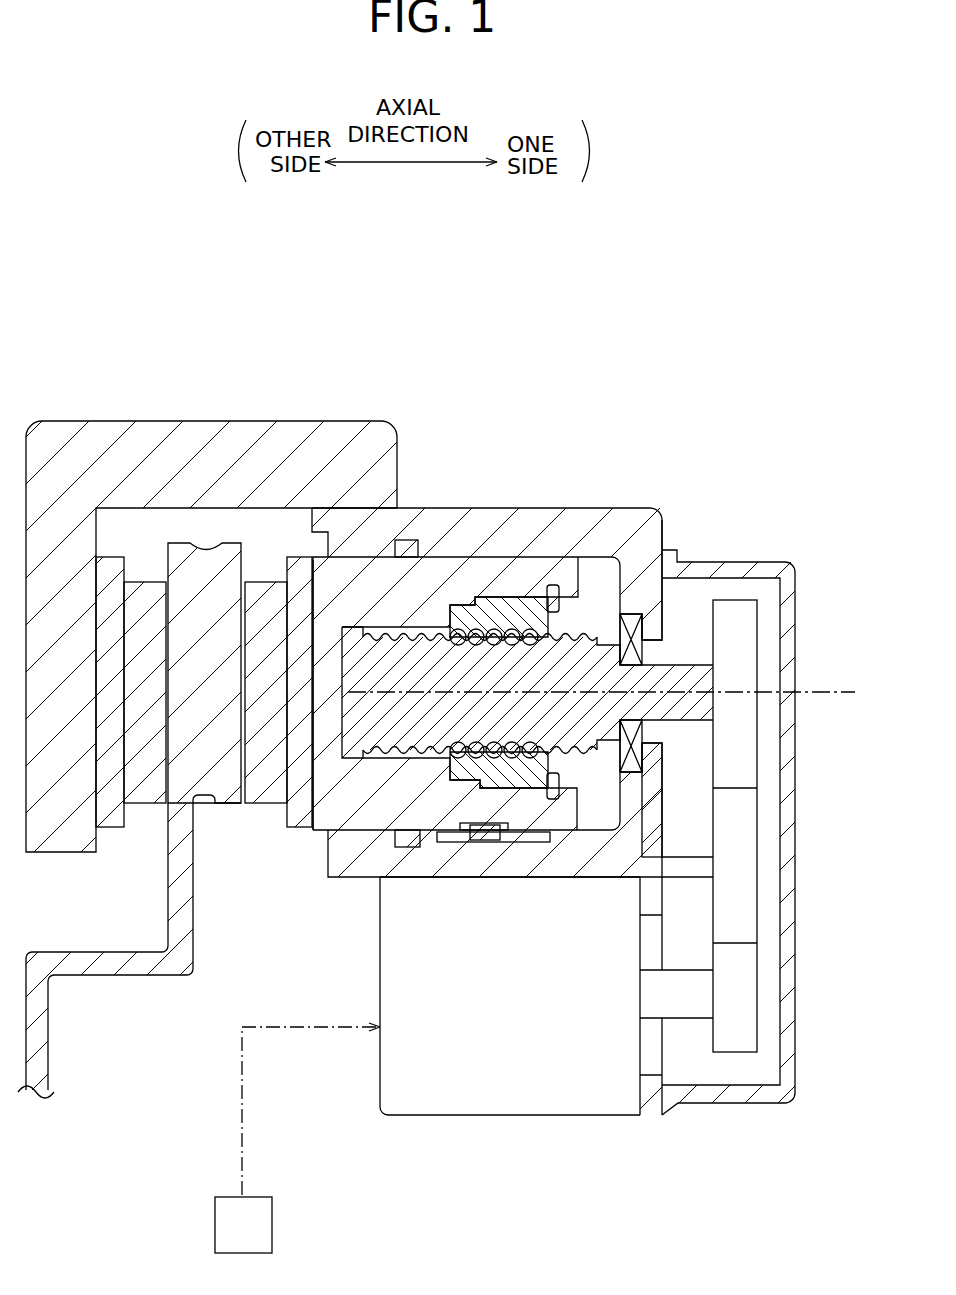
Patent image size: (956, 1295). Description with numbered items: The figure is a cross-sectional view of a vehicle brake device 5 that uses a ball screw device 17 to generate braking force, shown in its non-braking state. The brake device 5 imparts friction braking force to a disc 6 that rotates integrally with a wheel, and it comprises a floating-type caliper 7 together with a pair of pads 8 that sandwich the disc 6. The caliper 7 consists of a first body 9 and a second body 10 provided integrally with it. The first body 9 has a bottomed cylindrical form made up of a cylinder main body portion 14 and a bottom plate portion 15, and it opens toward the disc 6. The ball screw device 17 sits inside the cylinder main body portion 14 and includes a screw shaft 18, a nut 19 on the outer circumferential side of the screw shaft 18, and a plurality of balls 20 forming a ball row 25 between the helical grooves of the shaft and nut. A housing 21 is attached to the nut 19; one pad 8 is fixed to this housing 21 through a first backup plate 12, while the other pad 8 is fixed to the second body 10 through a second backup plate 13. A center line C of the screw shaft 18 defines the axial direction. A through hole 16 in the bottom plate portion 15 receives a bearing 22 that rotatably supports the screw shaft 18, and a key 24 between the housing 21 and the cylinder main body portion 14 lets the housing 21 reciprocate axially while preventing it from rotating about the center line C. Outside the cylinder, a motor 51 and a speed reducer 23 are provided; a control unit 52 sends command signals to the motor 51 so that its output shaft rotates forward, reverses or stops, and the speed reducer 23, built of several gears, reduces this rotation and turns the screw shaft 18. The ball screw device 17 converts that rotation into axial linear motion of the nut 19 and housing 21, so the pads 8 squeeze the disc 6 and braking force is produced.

The brake device 5 is at (716, 498).
The disc 6 is at (206, 550).
The caliper 7 is at (346, 393).
The pads 8 is at (140, 592).
The first body 9 is at (458, 503).
The second body 10 is at (248, 417).
The first backup plate 12 is at (301, 592).
The second backup plate 13 is at (107, 592).
The cylinder main body portion 14 is at (482, 555).
The bottom plate portion 15 is at (636, 613).
The through hole 16 is at (650, 760).
The ball screw device 17 is at (431, 542).
The screw shaft 18 is at (598, 632).
The nut 19 is at (527, 630).
The balls 20 is at (550, 584).
The housing 21 is at (362, 592).
The bearing 22 is at (642, 650).
The speed reducer 23 is at (762, 822).
The key 24 is at (483, 843).
The ball row 25 is at (477, 760).
The motor 51 is at (502, 1118).
The control unit 52 is at (272, 1224).
The center line C is at (829, 688).